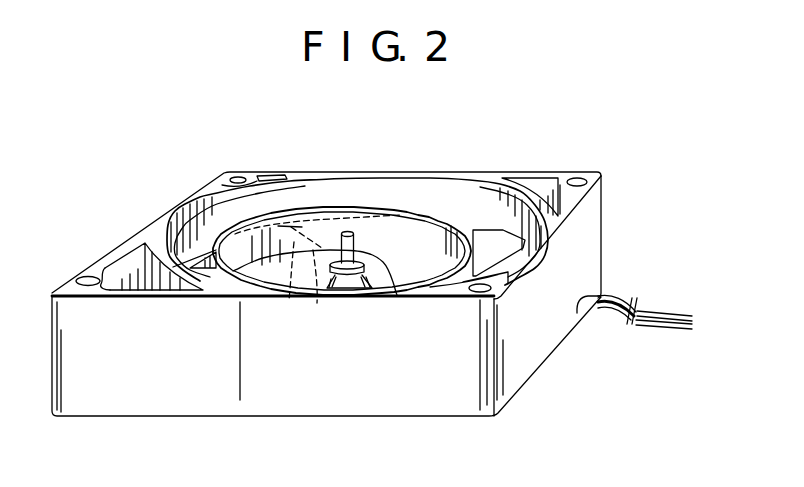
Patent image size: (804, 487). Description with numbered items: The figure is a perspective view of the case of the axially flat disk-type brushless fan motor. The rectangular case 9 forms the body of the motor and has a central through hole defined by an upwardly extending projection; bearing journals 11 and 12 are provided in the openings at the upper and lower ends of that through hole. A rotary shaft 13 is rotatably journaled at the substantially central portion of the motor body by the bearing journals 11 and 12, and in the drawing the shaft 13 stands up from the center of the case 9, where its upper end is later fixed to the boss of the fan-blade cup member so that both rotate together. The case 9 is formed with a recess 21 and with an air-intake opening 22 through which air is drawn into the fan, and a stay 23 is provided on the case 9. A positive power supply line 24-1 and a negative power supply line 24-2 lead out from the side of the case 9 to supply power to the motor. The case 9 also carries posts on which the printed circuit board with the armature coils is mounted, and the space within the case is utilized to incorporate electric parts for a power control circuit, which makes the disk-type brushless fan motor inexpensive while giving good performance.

The rectangular case 9 is at (585, 228).
The bearing journal 11 is at (362, 172).
The recess 21 is at (427, 178).
The air-intake opening 22 is at (317, 304).
The stay 23 is at (288, 302).
The bearing journal 12 is at (334, 269).
The rotary shaft 13 is at (363, 270).
The positive power supply line 24-1 is at (688, 314).
The negative power supply line 24-2 is at (688, 328).